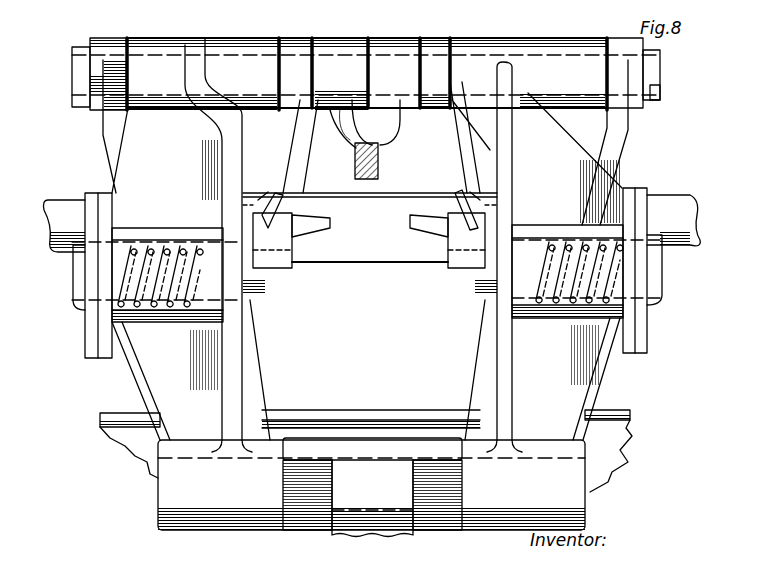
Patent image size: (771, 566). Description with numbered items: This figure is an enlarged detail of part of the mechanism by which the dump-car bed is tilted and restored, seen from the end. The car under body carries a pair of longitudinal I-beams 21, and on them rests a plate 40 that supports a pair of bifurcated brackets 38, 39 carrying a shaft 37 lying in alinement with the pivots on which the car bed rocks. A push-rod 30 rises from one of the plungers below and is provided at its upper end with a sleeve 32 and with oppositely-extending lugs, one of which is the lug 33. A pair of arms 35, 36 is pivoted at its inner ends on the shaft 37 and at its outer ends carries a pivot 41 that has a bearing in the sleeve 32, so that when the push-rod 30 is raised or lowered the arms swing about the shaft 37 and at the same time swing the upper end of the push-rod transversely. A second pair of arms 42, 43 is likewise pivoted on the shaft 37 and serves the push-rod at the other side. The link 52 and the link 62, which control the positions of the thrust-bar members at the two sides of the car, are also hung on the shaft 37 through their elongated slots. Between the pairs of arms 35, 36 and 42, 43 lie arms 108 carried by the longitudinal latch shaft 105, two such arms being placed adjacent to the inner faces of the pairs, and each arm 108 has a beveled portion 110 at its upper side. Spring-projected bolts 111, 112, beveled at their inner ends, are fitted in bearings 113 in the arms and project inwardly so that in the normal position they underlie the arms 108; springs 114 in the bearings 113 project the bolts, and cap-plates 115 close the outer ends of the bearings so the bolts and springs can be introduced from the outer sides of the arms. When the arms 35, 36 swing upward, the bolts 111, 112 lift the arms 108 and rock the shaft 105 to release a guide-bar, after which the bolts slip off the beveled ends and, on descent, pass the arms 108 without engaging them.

The I-beams 21 is at (625, 446).
The push-rod 30 is at (362, 535).
The sleeve 32 is at (366, 438).
The lug 33 is at (420, 472).
The arm 35 is at (500, 356).
The arm 36 is at (118, 173).
The shaft 37 is at (657, 85).
The bifurcated bracket 38 is at (113, 148).
The bifurcated bracket 39 is at (625, 142).
The plate 40 is at (630, 412).
The pivot 41 is at (158, 503).
The arm 42 is at (570, 30).
The arm 43 is at (232, 40).
The link 52 is at (396, 150).
The link 62 is at (355, 148).
The shaft 105 is at (686, 195).
The arm 108 is at (278, 270).
The beveled portion 110 is at (318, 232).
The spring-projected bolt 111 is at (475, 287).
The spring-projected bolt 112 is at (262, 287).
The bearing 113 is at (172, 322).
The spring 114 is at (110, 370).
The cap-plate 115 is at (80, 290).